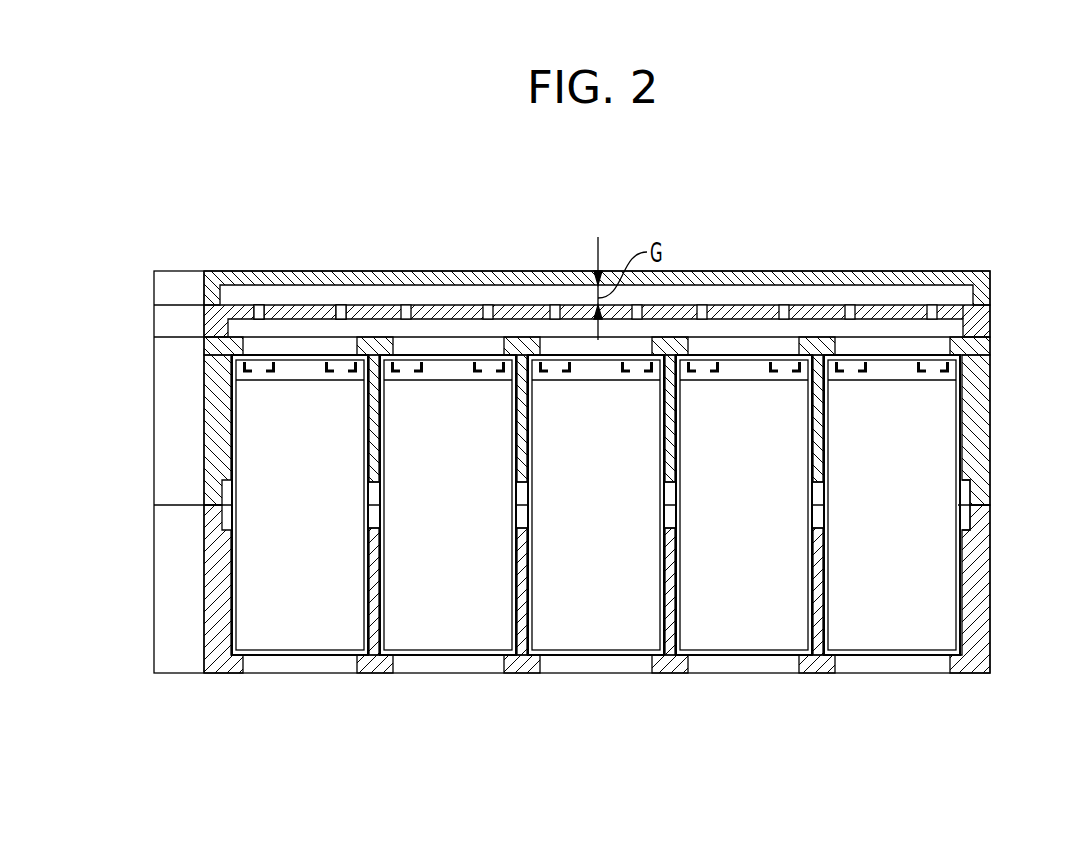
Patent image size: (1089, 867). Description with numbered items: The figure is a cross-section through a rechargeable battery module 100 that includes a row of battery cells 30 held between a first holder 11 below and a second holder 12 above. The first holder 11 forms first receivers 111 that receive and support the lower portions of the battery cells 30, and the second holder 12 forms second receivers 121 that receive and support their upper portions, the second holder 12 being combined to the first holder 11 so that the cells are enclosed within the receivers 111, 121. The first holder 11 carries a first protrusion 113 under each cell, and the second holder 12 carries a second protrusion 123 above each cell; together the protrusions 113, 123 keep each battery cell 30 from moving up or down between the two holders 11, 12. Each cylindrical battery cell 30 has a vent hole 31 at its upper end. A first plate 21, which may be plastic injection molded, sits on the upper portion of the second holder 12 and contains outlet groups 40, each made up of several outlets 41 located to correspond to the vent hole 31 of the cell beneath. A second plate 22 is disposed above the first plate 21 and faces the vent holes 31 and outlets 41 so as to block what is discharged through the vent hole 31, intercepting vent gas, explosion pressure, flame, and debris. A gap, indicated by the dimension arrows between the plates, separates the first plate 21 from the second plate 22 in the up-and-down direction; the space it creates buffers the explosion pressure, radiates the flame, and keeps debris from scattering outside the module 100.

The rechargeable battery module 100 is at (572, 426).
The first holder 11 is at (631, 589).
The first receiver 111 is at (1013, 535).
The first protrusion 113 is at (655, 704).
The second holder 12 is at (630, 421).
The second receiver 121 is at (1013, 472).
The second protrusion 123 is at (710, 332).
The first plate 21 is at (547, 323).
The second plate 22 is at (547, 288).
The battery cell 30 is at (532, 548).
The vent hole 31 is at (526, 387).
The outlet group 40 is at (301, 248).
The outlet 41 is at (592, 268).